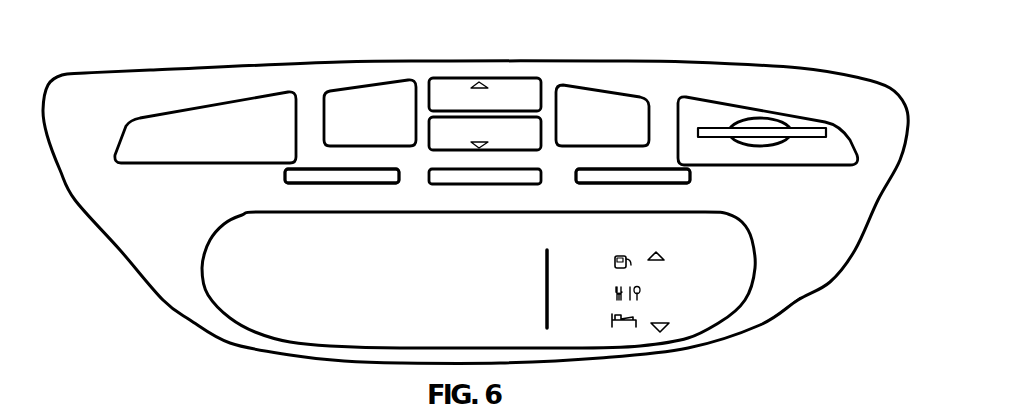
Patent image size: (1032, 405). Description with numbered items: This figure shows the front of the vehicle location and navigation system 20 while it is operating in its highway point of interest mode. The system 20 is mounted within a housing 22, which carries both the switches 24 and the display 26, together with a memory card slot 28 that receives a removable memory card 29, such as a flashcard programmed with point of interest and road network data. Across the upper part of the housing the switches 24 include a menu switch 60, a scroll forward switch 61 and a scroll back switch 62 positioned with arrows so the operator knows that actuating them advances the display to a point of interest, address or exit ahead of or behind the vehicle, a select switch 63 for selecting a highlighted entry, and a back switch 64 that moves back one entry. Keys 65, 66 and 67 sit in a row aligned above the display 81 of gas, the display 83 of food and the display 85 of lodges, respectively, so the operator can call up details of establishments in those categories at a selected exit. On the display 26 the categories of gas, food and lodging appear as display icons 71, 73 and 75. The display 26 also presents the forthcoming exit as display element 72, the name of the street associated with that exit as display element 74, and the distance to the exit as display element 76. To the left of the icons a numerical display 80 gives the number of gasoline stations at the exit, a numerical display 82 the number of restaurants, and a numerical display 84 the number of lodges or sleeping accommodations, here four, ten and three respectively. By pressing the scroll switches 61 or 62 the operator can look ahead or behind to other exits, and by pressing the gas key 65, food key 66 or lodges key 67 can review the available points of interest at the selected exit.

The vehicle location and navigation system 20 is at (888, 78).
The housing 22 is at (866, 226).
The switches 24 is at (116, 122).
The display 26 is at (241, 254).
The memory card slot 28 is at (768, 123).
The removable memory card 29 is at (813, 128).
The menu switch 60 is at (172, 122).
The scroll forward switch 61 is at (464, 88).
The scroll back switch 62 is at (441, 83).
The select switch 63 is at (591, 98).
The back switch 64 is at (346, 90).
The gas key 65 is at (308, 173).
The food key 66 is at (511, 173).
The lodges key 67 is at (654, 173).
The gas display icon 71 is at (632, 267).
The exit display element 72 is at (285, 255).
The food display icon 73 is at (647, 295).
The road name text 74 is at (285, 288).
The lodging display icon 75 is at (640, 313).
The distance display element 76 is at (285, 318).
The gasoline station numerical display 80 is at (571, 256).
The gas display 81 is at (305, 226).
The restaurant numerical display 82 is at (564, 295).
The food display 83 is at (445, 226).
The lodging numerical display 84 is at (575, 328).
The lodges display 85 is at (692, 226).